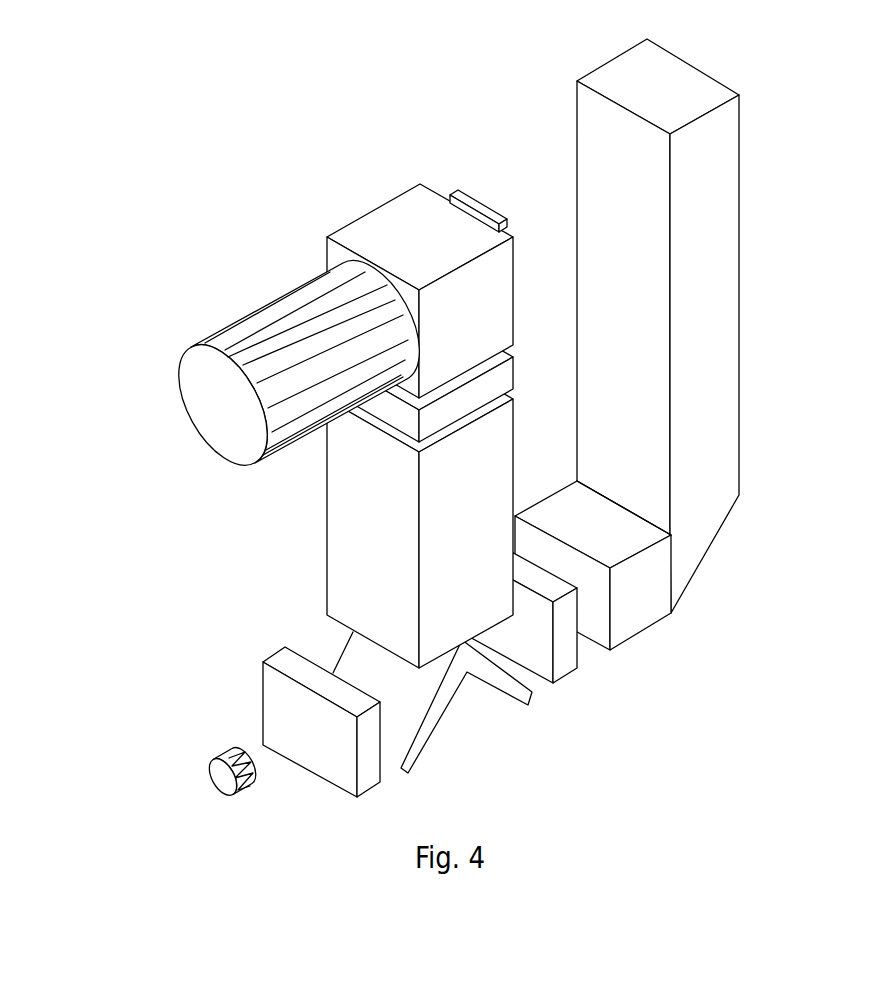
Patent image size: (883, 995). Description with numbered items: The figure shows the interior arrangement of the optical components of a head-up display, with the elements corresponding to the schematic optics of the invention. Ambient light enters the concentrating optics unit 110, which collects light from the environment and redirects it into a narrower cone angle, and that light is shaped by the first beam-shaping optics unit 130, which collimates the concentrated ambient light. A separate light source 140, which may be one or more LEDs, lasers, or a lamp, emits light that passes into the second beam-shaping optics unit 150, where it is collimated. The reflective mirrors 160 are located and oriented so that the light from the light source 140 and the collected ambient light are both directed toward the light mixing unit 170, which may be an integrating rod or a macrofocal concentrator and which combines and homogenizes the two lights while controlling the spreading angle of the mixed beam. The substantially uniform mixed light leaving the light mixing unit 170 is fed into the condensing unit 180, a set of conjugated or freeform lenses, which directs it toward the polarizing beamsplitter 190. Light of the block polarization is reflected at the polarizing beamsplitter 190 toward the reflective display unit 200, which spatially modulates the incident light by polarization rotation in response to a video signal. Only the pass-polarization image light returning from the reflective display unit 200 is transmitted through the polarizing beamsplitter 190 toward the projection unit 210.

The concentrating optics unit 110 is at (747, 335).
The first beam-shaping optics unit 130 is at (575, 676).
The light source 140 is at (202, 766).
The second beam-shaping optics unit 150 is at (252, 693).
The reflective mirrors 160 is at (486, 687).
The light mixing unit 170 is at (317, 557).
The condensing unit 180 is at (524, 371).
The polarizing beamsplitter 190 is at (361, 203).
The reflective display unit 200 is at (482, 192).
The projection unit 210 is at (253, 298).